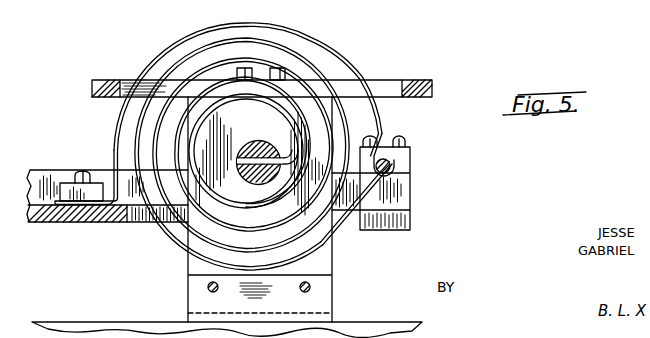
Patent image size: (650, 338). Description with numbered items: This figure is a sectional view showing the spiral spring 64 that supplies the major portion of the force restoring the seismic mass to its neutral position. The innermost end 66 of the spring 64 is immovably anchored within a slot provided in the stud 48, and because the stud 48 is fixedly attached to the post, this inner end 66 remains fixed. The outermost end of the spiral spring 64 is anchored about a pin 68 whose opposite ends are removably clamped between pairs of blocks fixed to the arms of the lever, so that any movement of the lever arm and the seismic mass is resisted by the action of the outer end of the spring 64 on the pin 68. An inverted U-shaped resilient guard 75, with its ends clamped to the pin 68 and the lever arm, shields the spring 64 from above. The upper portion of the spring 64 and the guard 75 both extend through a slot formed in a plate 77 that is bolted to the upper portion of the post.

The resilient guard 75 is at (335, 45).
The plate 77 is at (412, 83).
The stud 48 is at (252, 140).
The innermost end of the spring 66 is at (238, 184).
The pin 68 is at (393, 162).
The spiral spring 64 is at (324, 247).